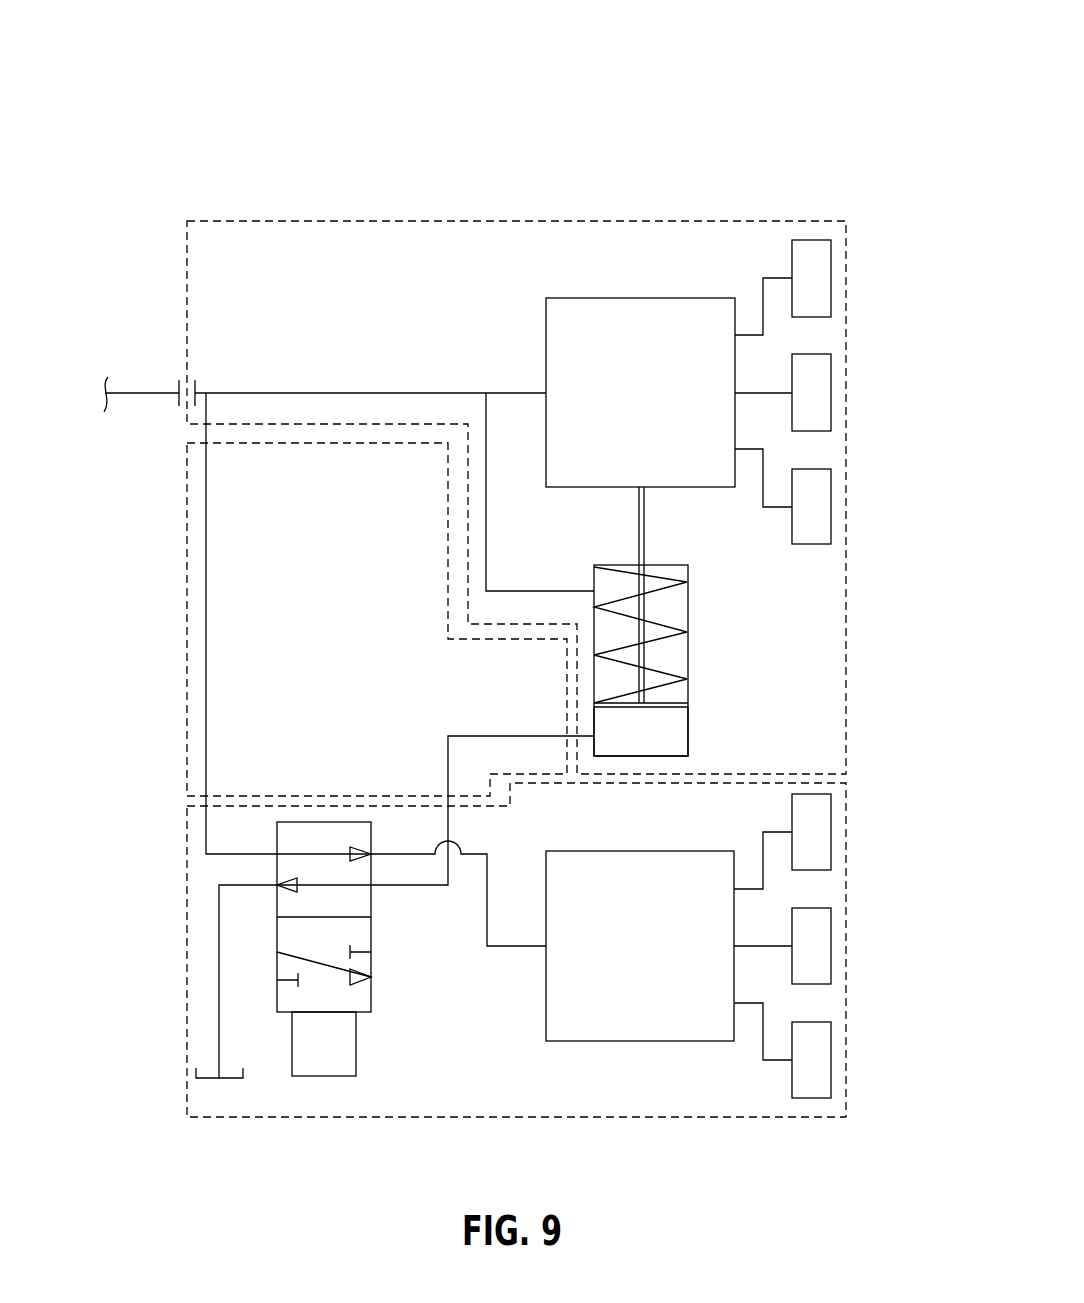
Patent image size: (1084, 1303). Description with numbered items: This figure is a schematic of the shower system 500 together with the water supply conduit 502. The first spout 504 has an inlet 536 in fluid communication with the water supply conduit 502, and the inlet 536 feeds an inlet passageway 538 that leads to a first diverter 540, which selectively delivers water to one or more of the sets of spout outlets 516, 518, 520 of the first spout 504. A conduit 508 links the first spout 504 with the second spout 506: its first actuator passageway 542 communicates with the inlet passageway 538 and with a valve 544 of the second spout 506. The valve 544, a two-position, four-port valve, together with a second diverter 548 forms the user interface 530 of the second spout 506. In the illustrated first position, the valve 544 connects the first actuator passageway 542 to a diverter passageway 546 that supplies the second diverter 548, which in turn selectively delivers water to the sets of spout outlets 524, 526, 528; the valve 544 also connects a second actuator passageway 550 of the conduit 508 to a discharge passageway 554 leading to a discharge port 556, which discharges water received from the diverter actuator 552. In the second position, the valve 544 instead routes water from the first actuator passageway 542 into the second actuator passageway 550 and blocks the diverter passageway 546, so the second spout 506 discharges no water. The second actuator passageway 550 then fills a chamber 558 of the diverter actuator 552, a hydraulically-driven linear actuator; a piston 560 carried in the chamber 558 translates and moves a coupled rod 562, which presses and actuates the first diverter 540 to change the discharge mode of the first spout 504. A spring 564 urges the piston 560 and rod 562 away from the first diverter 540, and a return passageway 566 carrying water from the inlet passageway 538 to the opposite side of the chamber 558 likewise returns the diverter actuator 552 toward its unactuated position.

The shower system 500 is at (204, 126).
The water supply conduit 502 is at (142, 393).
The first spout 504 is at (497, 195).
The second spout 506 is at (170, 885).
The conduit 508 is at (170, 630).
The set of spout outlets 516 is at (831, 278).
The set of spout outlets 518 is at (831, 397).
The set of spout outlets 520 is at (831, 507).
The set of spout outlets 524 is at (831, 832).
The set of spout outlets 526 is at (831, 946).
The set of spout outlets 528 is at (831, 1060).
The user interface 530 is at (343, 1103).
The inlet 536 is at (202, 393).
The inlet passageway 538 is at (383, 393).
The first diverter 540 is at (642, 298).
The first actuator passageway 542 is at (206, 527).
The valve 544 is at (357, 1050).
The diverter passageway 546 is at (512, 948).
The second diverter 548 is at (647, 1041).
The second actuator passageway 550 is at (446, 753).
The diverter actuator 552 is at (688, 654).
The discharge passageway 554 is at (219, 952).
The discharge port 556 is at (196, 1078).
The chamber 558 is at (683, 737).
The piston 560 is at (688, 707).
The rod 562 is at (644, 531).
The spring 564 is at (655, 622).
The return passageway 566 is at (487, 519).